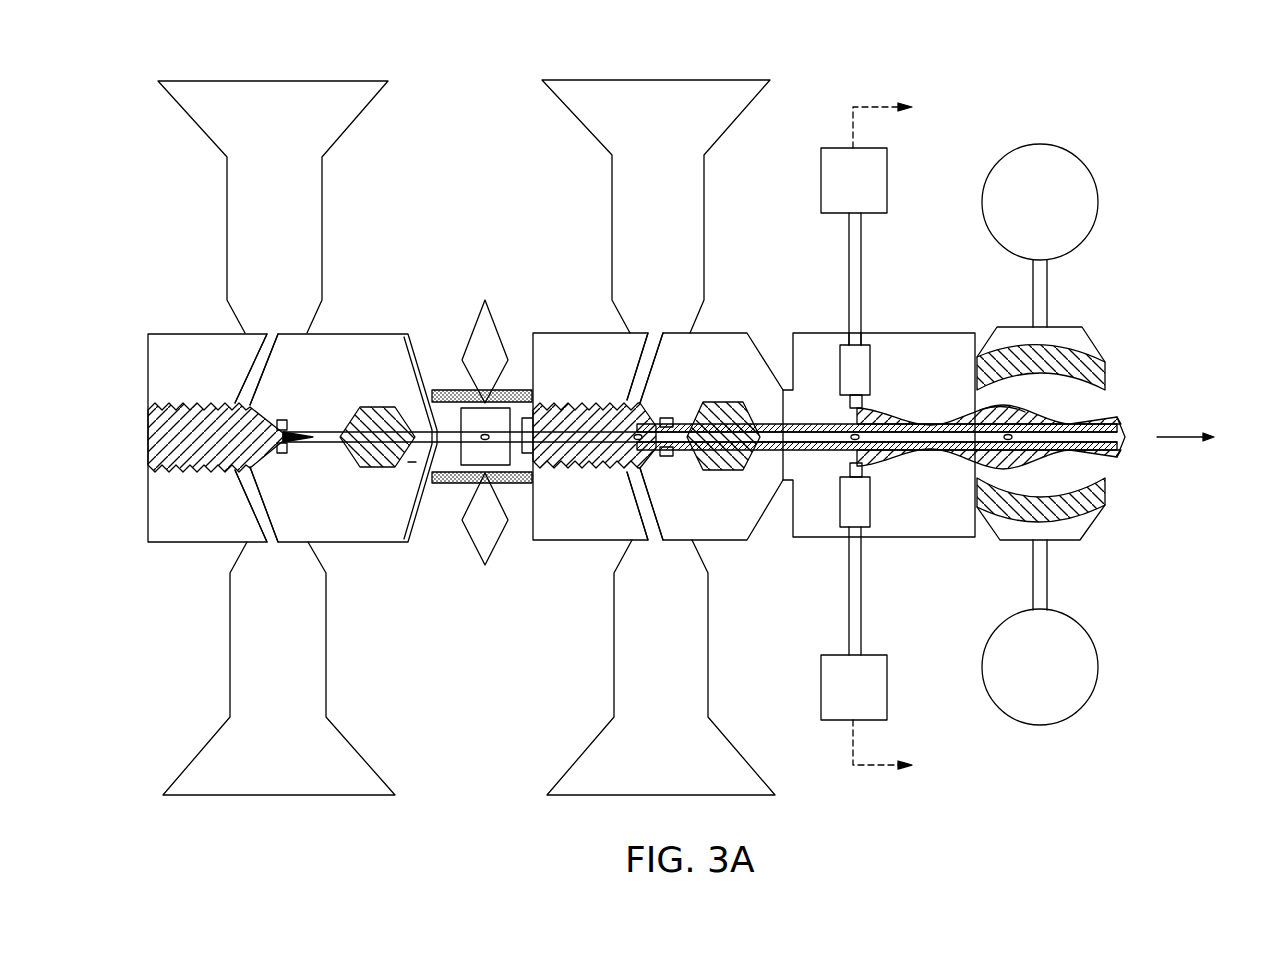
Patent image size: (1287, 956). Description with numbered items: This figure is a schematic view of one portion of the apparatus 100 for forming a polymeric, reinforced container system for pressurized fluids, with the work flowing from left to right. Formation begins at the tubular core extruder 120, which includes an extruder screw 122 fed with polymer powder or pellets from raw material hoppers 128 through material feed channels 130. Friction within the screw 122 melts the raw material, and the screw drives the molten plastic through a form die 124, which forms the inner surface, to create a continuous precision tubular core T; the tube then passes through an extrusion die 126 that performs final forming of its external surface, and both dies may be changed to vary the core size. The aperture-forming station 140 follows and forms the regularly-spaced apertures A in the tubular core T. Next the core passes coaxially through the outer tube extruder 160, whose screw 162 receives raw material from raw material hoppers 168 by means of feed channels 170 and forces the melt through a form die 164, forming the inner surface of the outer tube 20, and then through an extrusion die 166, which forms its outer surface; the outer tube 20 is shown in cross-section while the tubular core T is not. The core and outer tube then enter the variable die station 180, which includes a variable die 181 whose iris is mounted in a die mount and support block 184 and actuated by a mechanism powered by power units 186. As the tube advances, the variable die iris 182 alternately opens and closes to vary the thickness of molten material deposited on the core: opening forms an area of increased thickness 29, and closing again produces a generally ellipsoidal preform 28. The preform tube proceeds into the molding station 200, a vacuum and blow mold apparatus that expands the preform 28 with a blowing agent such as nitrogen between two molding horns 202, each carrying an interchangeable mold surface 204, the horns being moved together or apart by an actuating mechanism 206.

The apparatus 100 is at (1162, 120).
The tubular core extruder 120 is at (198, 173).
The extruder screw 122 is at (212, 472).
The form die 124 is at (287, 455).
The extrusion die 126 is at (373, 406).
The raw material hoppers 128 is at (322, 183).
The material feed channels 130 is at (262, 368).
The aperture-forming station 140 is at (487, 306).
The outer tube extruder 160 is at (737, 262).
The screw 162 is at (597, 470).
The form die 164 is at (666, 416).
The extrusion die 166 is at (725, 402).
The raw material hoppers 168 is at (705, 165).
The feed channels 170 is at (645, 362).
The variable die station 180 is at (862, 262).
The variable die 181 is at (870, 345).
The variable die iris 182 is at (850, 404).
The die mount and support block 184 is at (840, 350).
The power units 186 is at (887, 192).
The outer tube 20 is at (680, 457).
The preform 28 is at (1042, 412).
The area of increased thickness 29 is at (880, 410).
The molding station 200 is at (1047, 298).
The molding horns 202 is at (1082, 328).
The mold surface 204 is at (1088, 388).
The actuating mechanism 206 is at (1098, 205).
The tubular core T is at (413, 465).
The apertures A is at (485, 443).